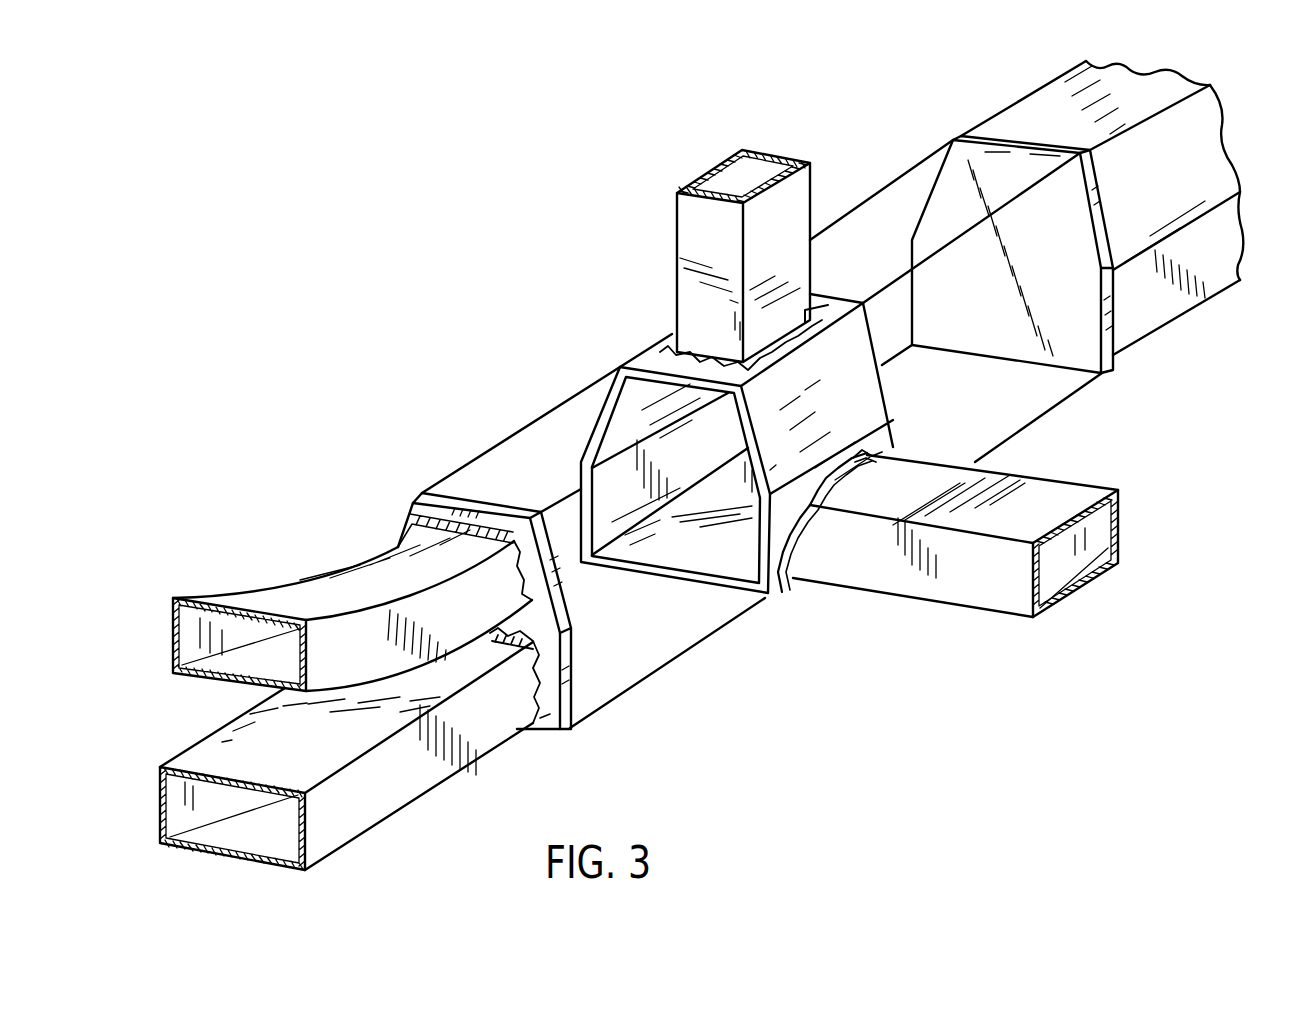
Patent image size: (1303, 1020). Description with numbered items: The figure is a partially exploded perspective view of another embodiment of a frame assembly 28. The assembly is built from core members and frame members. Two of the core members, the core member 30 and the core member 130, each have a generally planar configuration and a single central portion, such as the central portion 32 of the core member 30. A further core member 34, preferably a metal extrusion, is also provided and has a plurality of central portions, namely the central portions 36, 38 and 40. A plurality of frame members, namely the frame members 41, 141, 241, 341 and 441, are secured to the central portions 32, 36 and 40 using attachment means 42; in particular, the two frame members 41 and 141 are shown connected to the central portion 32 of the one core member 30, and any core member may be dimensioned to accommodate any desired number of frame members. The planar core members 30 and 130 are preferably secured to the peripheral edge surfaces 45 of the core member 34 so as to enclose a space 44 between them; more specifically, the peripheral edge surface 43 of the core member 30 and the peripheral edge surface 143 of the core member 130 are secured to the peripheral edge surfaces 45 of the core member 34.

The frame assembly 28 is at (618, 311).
The core member 30 is at (398, 545).
The central portion 32 is at (548, 713).
The core member 34 is at (665, 340).
The central portion 36 is at (827, 310).
The central portion 38 is at (873, 393).
The central portion 40 is at (777, 560).
The frame member 41 is at (312, 590).
The attachment means 42 is at (662, 348).
The peripheral edge surface 43 is at (562, 612).
The space 44 is at (707, 469).
The peripheral edge surfaces 45 is at (581, 463).
The core member 130 is at (978, 136).
The frame member 141 is at (415, 790).
The peripheral edge surface 143 is at (1100, 218).
The frame member 241 is at (695, 256).
The frame member 341 is at (868, 572).
The frame member 441 is at (1158, 318).